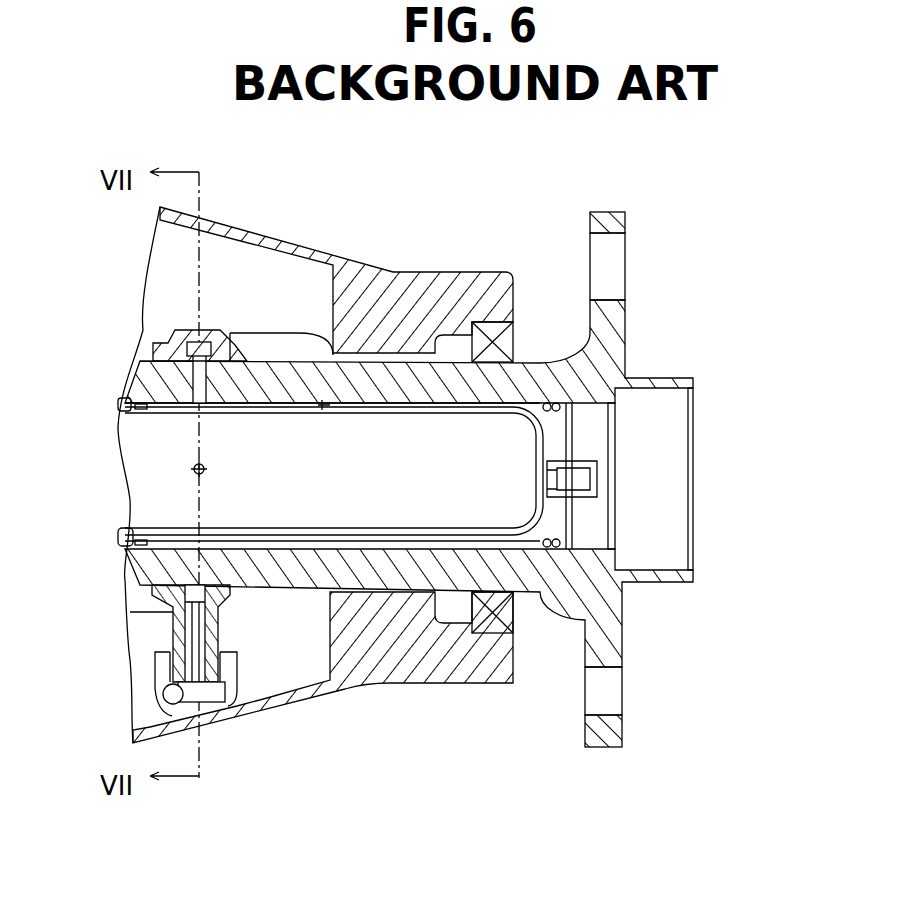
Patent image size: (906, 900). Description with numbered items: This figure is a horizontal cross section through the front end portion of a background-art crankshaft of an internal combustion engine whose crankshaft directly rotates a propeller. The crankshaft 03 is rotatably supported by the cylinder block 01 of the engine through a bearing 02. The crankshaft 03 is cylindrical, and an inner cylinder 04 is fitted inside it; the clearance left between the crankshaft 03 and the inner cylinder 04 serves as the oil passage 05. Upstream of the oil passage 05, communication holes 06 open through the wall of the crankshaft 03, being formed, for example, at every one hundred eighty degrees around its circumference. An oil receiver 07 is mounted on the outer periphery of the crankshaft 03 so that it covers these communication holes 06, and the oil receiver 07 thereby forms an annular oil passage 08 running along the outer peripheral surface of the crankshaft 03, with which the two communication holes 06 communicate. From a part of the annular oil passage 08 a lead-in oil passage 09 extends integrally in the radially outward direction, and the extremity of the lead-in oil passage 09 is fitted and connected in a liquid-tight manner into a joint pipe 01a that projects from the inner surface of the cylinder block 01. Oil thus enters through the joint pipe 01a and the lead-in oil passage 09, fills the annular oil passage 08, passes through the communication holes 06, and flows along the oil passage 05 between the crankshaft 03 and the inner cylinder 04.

The cylinder block 01 is at (322, 262).
The joint pipe 01a is at (236, 698).
The bearing 02 is at (398, 356).
The crankshaft 03 is at (293, 360).
The inner cylinder 04 is at (385, 412).
The oil passage 05 is at (324, 407).
The communication holes 06 is at (182, 406).
The oil receiver 07 is at (185, 334).
The annular oil passage 08 is at (150, 332).
The lead-in oil passage 09 is at (177, 641).